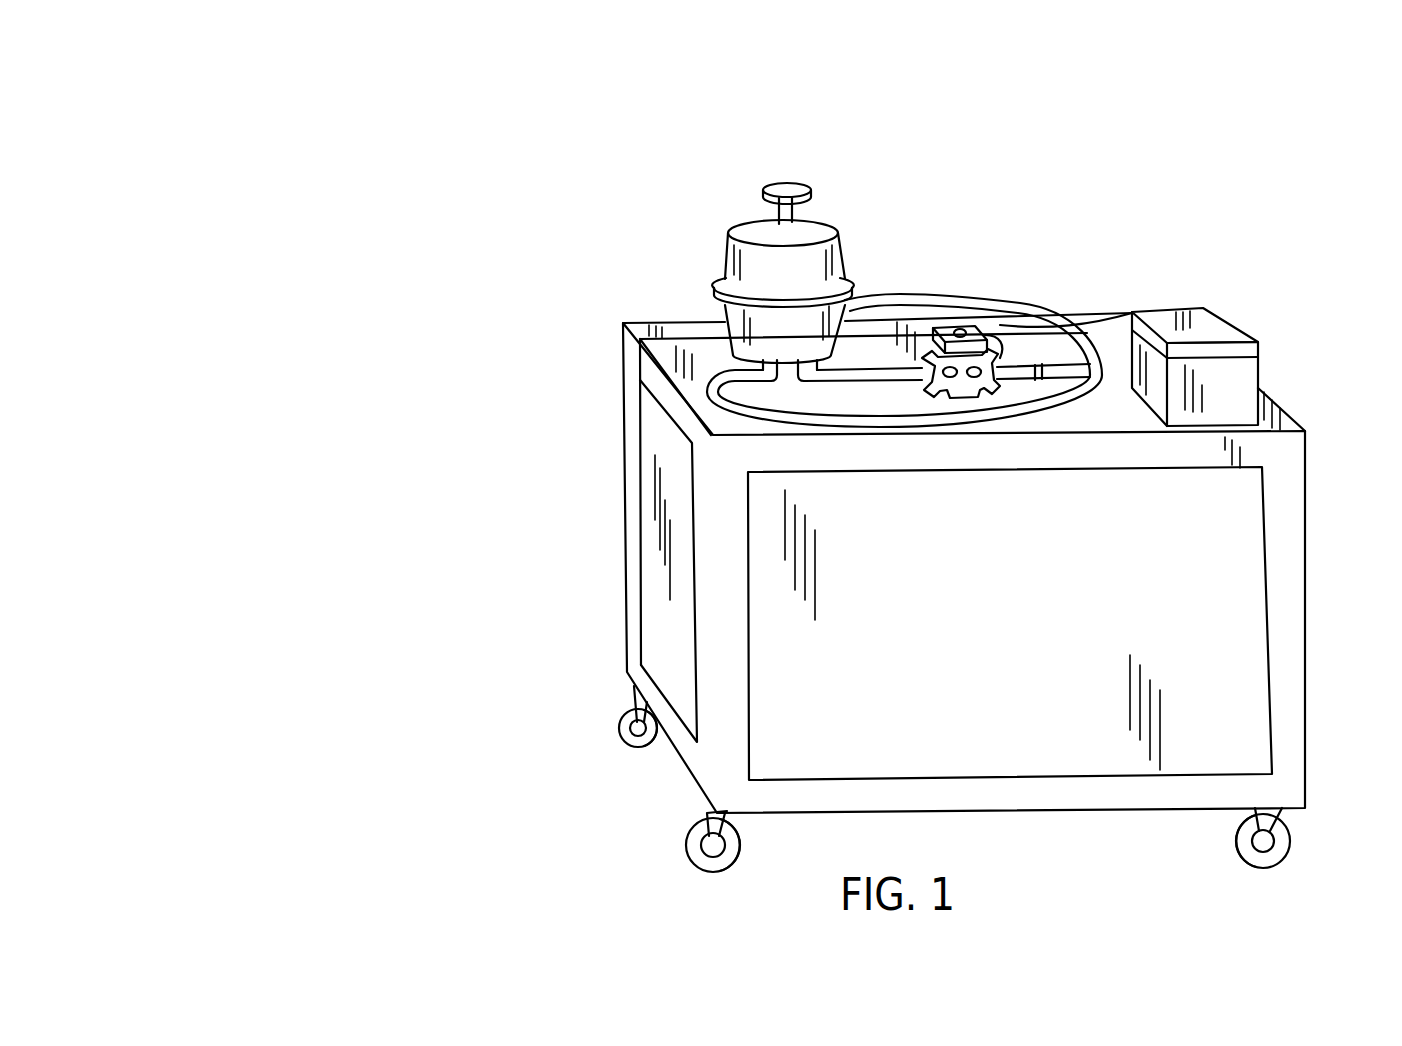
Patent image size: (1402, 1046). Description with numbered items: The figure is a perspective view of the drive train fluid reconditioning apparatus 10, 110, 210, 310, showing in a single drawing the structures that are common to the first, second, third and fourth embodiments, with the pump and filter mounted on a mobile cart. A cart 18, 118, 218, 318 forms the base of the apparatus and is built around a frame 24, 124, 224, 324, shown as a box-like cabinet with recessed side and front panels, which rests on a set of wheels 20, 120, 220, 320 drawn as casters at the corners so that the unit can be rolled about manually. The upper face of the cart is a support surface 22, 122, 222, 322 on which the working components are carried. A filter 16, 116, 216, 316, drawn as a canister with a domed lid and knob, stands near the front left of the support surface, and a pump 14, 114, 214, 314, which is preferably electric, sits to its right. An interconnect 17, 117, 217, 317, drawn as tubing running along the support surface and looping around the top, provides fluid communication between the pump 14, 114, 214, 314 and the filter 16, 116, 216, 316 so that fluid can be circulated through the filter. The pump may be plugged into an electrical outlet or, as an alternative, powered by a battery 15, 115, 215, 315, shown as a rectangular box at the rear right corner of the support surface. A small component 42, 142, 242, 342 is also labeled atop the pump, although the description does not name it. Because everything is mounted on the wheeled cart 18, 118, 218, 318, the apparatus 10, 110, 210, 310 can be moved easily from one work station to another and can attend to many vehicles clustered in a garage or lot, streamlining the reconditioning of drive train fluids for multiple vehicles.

The reconditioning apparatus 10 is at (736, 463).
The reconditioning apparatus 110 is at (736, 463).
The reconditioning apparatus 210 is at (736, 463).
The reconditioning apparatus 310 is at (599, 195).
The pump 14 is at (1119, 303).
The pump 114 is at (1119, 303).
The pump 214 is at (1119, 303).
The pump 314 is at (1000, 348).
The battery 15 is at (1163, 335).
The battery 115 is at (1163, 335).
The battery 215 is at (1163, 335).
The battery 315 is at (1137, 310).
The filter 16 is at (971, 209).
The filter 116 is at (971, 209).
The filter 216 is at (971, 209).
The filter 316 is at (840, 173).
The interconnect 17 is at (988, 247).
The interconnect 117 is at (988, 247).
The interconnect 217 is at (988, 247).
The interconnect 317 is at (866, 371).
The cart 18 is at (710, 563).
The cart 118 is at (710, 563).
The cart 218 is at (710, 563).
The cart 318 is at (607, 432).
The wheels 20 is at (704, 779).
The wheels 120 is at (704, 779).
The wheels 220 is at (704, 779).
The wheels 320 is at (686, 859).
The support surface 22 is at (618, 333).
The support surface 122 is at (618, 333).
The support surface 222 is at (618, 333).
The support surface 322 is at (707, 368).
The frame 24 is at (412, 561).
The frame 124 is at (412, 561).
The frame 224 is at (412, 561).
The frame 324 is at (623, 587).
The switch 42 is at (1145, 256).
The switch 142 is at (1145, 256).
The switch 242 is at (1145, 256).
The switch 342 is at (966, 330).